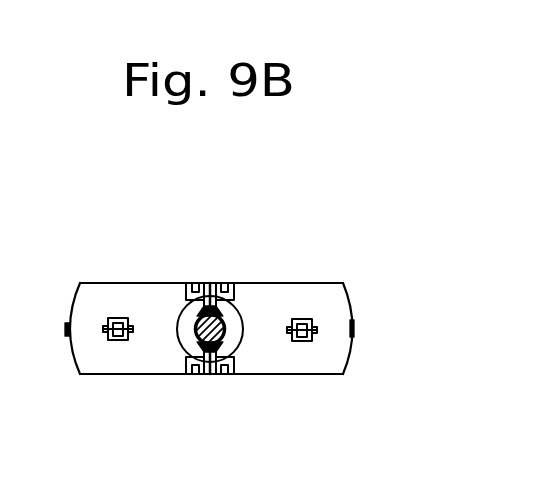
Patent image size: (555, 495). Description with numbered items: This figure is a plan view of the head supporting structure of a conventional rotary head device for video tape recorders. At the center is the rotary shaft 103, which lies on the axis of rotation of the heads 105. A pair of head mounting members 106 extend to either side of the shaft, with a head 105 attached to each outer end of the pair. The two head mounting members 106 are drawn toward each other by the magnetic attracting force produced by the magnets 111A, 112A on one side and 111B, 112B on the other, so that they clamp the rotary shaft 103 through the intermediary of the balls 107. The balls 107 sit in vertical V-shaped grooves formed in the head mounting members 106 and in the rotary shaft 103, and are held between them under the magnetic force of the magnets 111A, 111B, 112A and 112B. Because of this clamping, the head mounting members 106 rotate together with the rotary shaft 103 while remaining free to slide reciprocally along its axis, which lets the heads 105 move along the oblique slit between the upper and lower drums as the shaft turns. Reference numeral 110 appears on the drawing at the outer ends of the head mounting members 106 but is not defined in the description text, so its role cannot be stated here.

The rotary shaft 103 is at (212, 300).
The head 105 is at (67, 326).
The head mounting member 106 is at (100, 292).
The ball 107 is at (182, 306).
The fastening screw 110 is at (314, 331).
The magnet 111A is at (198, 285).
The magnet 112A is at (224, 285).
The magnet 111B is at (203, 372).
The magnet 112B is at (218, 372).